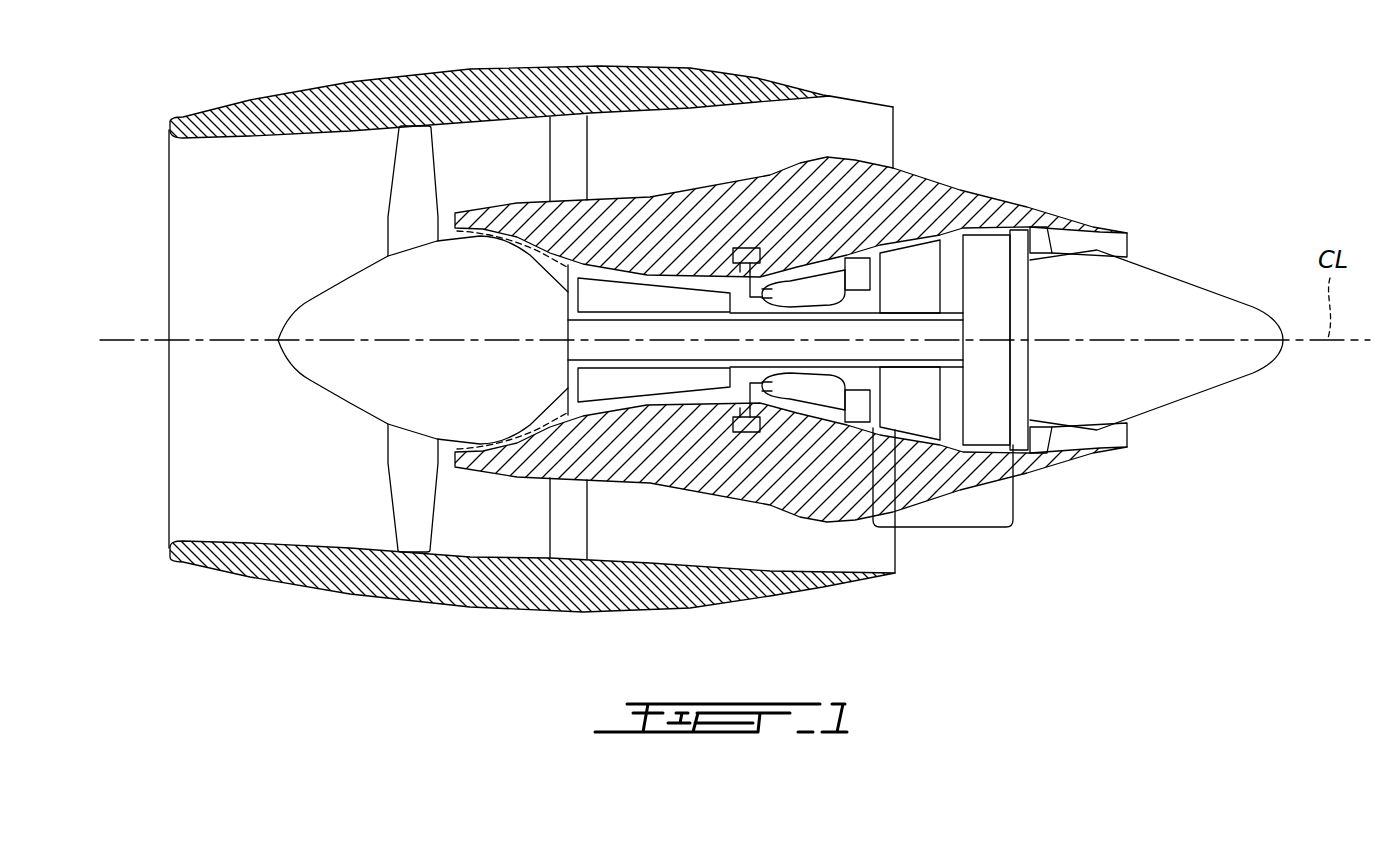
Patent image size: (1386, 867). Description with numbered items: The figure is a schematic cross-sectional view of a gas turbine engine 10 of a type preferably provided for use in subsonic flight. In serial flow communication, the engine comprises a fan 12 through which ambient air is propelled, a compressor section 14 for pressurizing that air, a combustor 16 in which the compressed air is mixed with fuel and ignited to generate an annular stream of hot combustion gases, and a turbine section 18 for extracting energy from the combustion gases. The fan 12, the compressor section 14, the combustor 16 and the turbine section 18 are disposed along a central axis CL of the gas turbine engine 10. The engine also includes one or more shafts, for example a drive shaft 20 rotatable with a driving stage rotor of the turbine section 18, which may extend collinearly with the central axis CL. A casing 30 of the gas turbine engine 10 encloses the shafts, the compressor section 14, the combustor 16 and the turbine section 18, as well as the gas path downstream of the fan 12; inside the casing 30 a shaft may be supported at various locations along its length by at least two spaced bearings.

The gas turbine engine 10 is at (1081, 145).
The fan 12 is at (408, 477).
The compressor section 14 is at (633, 292).
The combustor 16 is at (810, 390).
The turbine section 18 is at (943, 528).
The drive shaft 20 is at (950, 320).
The casing 30 is at (833, 157).